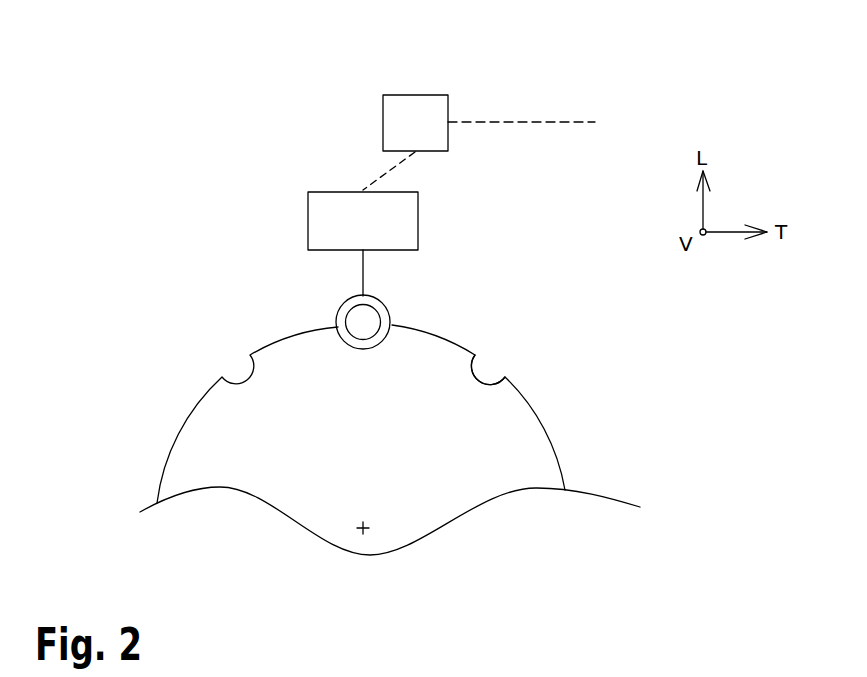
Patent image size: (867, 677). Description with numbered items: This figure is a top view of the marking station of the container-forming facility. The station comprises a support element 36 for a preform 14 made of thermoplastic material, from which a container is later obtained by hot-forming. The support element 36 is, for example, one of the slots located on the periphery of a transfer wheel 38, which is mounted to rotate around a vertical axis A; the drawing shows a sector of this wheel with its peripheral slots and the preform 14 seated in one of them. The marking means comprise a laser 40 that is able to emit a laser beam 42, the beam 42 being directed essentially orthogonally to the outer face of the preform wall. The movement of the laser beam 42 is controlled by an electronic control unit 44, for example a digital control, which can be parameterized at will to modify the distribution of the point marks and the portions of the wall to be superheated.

The preform 14 is at (352, 327).
The support element 36 is at (483, 380).
The transfer wheel 38 is at (497, 442).
The laser 40 is at (323, 220).
The laser beam 42 is at (363, 267).
The electronic control unit 44 is at (422, 110).
The vertical axis A is at (362, 530).